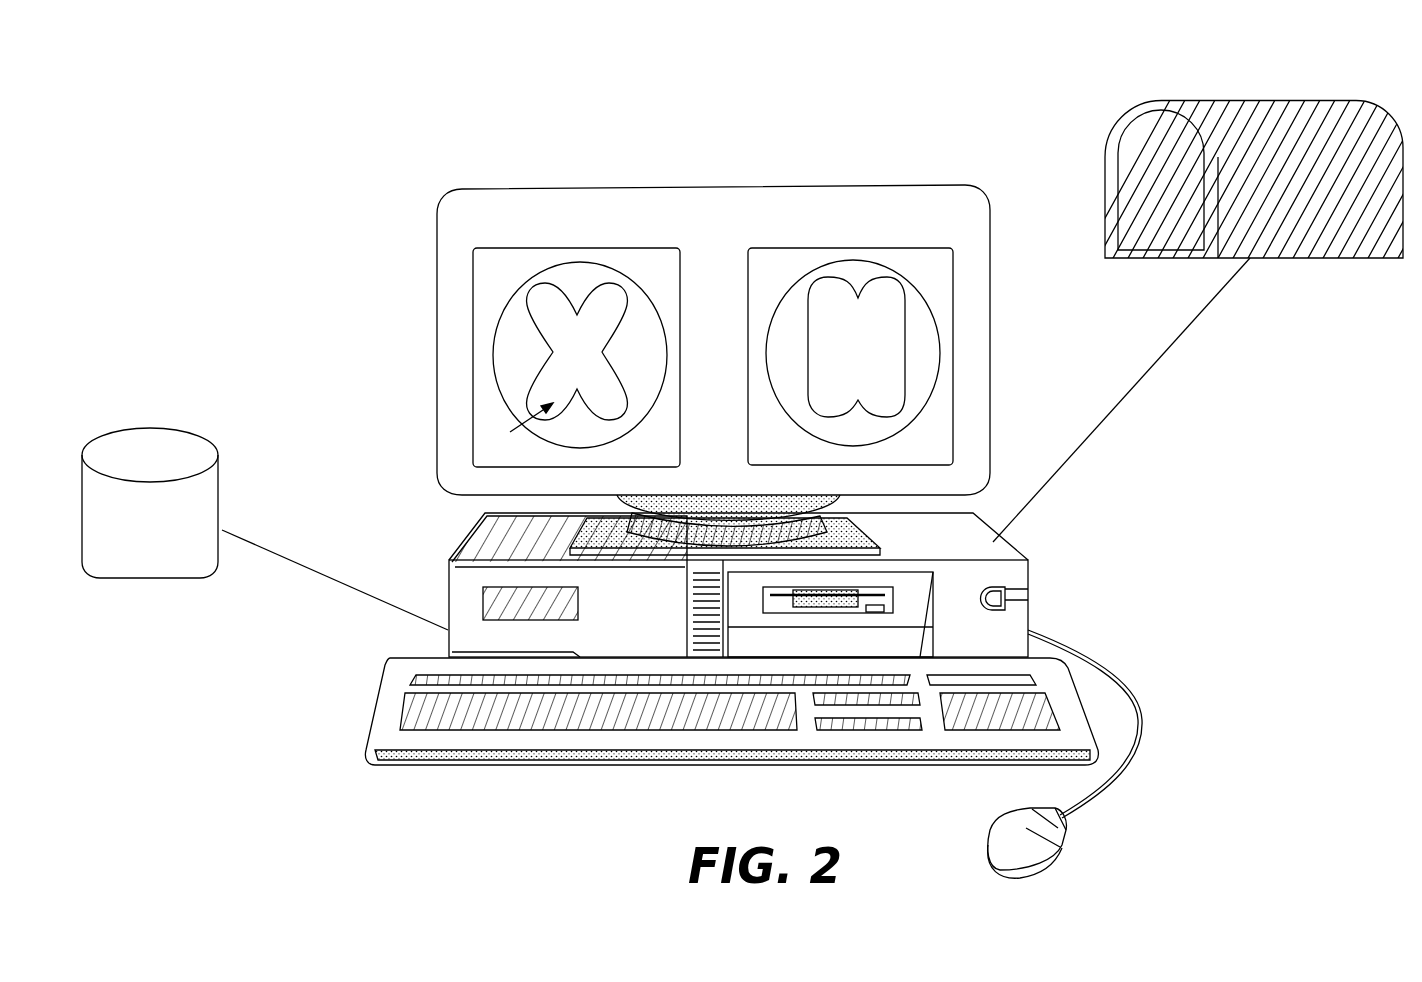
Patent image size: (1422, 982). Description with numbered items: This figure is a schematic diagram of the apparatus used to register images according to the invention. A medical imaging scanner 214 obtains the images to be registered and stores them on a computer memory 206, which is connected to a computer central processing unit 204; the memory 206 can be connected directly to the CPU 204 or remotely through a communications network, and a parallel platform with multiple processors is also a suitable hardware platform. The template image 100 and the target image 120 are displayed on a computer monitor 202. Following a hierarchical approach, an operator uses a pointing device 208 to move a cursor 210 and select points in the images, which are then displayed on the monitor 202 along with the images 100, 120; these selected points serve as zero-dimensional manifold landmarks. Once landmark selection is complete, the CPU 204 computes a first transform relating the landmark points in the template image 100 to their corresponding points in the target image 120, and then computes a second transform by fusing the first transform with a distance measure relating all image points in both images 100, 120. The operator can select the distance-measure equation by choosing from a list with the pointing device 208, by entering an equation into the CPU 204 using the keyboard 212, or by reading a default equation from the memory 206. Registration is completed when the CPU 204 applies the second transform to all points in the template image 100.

The template image 100 is at (640, 288).
The target image 120 is at (877, 278).
The computer monitor 202 is at (990, 378).
The computer central processing unit 204 is at (1030, 615).
The computer memory 206 is at (183, 430).
The pointing device 208 is at (1065, 846).
The cursor 210 is at (510, 432).
The keyboard 212 is at (487, 765).
The medical imaging scanner 214 is at (1335, 258).